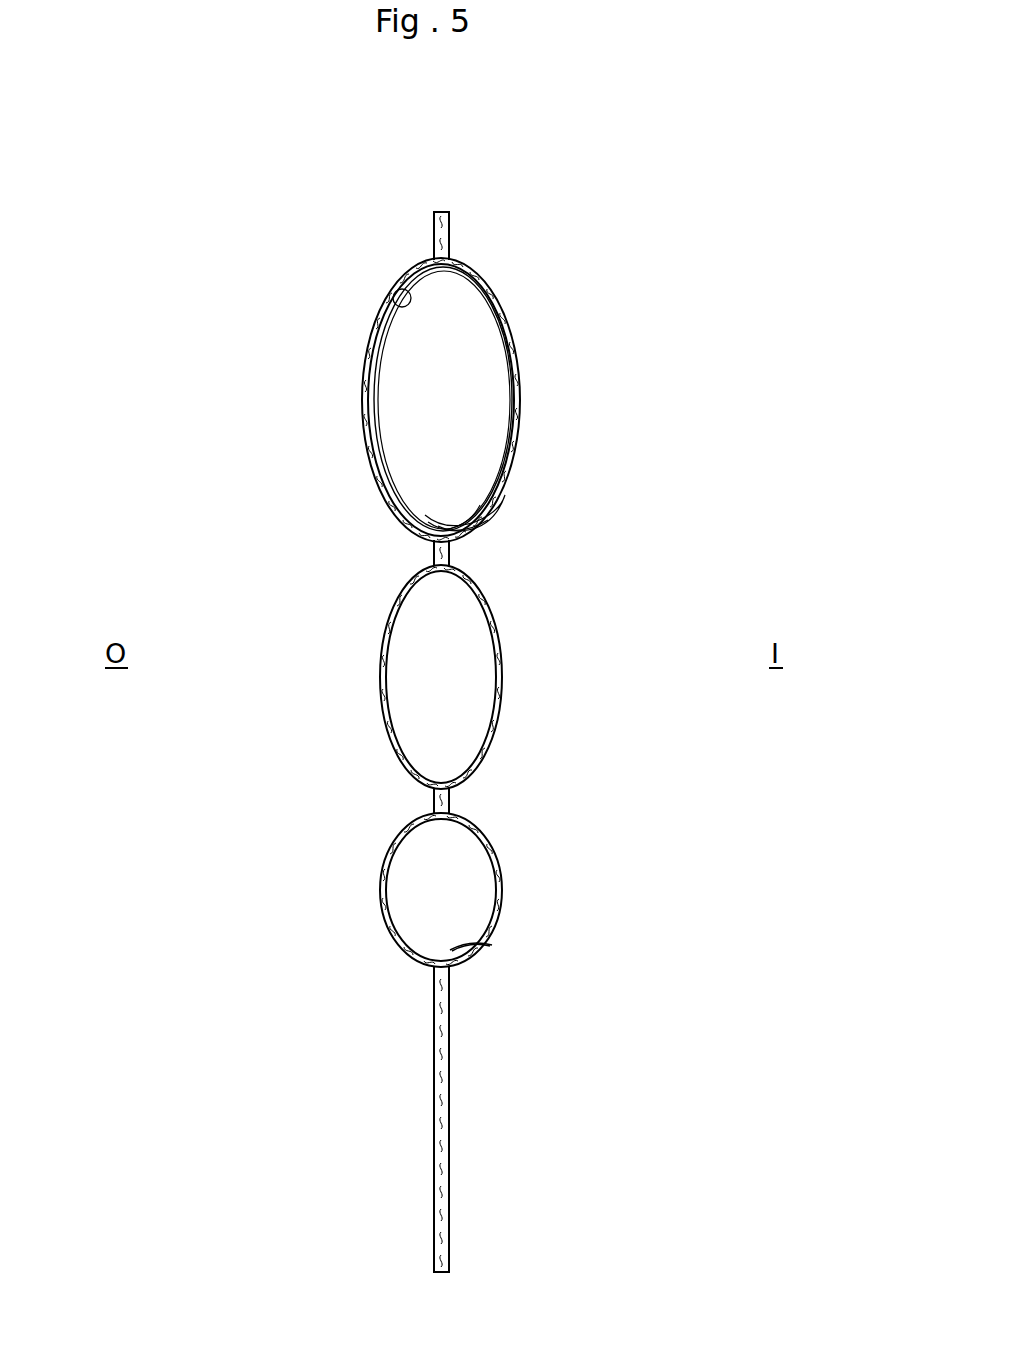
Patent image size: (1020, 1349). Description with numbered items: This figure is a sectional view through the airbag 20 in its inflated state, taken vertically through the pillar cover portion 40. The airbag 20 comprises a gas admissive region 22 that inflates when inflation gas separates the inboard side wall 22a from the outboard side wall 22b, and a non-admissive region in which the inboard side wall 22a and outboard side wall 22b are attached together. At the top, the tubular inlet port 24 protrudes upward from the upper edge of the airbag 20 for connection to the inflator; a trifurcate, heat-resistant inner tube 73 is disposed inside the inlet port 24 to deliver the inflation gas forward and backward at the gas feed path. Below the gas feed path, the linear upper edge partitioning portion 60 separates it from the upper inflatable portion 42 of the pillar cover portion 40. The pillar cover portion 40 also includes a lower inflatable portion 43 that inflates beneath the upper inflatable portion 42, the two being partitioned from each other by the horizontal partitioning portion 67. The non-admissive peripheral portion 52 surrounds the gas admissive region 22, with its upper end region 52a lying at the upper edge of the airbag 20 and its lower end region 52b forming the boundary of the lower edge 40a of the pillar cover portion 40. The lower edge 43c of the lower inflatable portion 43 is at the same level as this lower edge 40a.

The airbag 20 is at (244, 320).
The peripheral portion 52 is at (539, 706).
The upper end region of the peripheral portion 52a is at (445, 232).
The lower end region of the peripheral portion 52b is at (440, 1083).
The inlet port 24 is at (500, 305).
The inner tube 73 is at (405, 290).
The upper edge partitioning portion 60 is at (450, 555).
The gas admissive region 22 is at (467, 670).
The inboard side wall 22a is at (495, 617).
The outboard side wall 22b is at (390, 618).
The upper inflatable portion 42 is at (410, 703).
The pillar cover portion 40 is at (220, 708).
The lower inflatable portion 43 is at (410, 880).
The horizontal partitioning portion 67 is at (450, 800).
The lower edge of the pillar cover portion 40a is at (480, 950).
The lower edge of the lower inflatable portion 43c is at (471, 947).